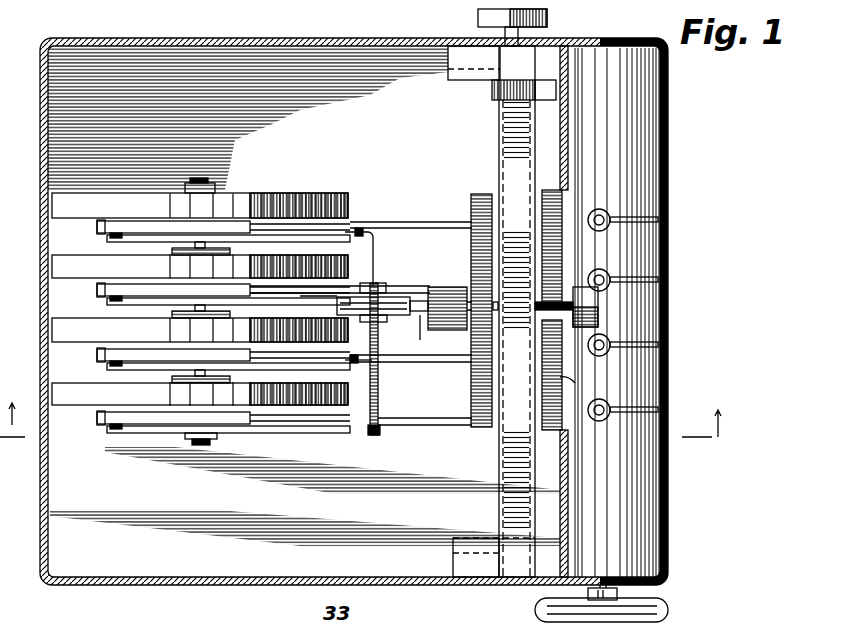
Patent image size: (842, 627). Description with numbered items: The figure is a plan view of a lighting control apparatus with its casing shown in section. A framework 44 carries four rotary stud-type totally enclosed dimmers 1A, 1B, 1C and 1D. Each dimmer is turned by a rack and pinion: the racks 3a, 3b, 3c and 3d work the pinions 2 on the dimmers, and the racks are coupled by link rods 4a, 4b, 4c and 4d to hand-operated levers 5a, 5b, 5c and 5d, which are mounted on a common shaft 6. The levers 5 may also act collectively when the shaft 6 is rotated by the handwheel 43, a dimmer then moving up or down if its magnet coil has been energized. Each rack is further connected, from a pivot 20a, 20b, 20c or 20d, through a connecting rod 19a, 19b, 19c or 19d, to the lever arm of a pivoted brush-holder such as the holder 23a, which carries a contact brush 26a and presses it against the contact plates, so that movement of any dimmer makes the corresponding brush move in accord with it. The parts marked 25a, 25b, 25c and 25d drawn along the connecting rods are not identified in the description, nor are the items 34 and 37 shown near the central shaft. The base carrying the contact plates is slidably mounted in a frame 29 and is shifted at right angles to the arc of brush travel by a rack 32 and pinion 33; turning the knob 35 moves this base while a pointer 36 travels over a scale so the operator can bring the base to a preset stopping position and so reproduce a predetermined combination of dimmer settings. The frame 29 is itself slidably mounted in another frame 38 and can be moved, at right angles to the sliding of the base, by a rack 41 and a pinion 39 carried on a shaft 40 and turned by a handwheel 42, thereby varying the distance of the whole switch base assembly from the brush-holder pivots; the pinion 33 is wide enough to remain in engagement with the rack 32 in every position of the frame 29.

The rotary stud-type totally enclosed dimmer 1A is at (82, 408).
The rotary stud-type totally enclosed dimmer 1B is at (52, 331).
The rotary stud-type totally enclosed dimmer 1C is at (52, 260).
The rotary stud-type totally enclosed dimmer 1D is at (115, 205).
The pinion 2 is at (369, 405).
The rack 3a is at (110, 428).
The rack 3b is at (135, 355).
The rack 3c is at (125, 290).
The rack 3d is at (135, 212).
The link rod 4a is at (420, 425).
The link rod 4b is at (411, 358).
The link rod 4c is at (405, 290).
The link rod 4d is at (432, 222).
The hand-operated lever 5 is at (315, 302).
The hand-operated lever 5a is at (608, 402).
The hand-operated lever 5b is at (608, 338).
The hand-operated lever 5c is at (608, 272).
The hand-operated lever 5d is at (608, 212).
The shaft 6 is at (612, 590).
The connecting rod 19a is at (322, 432).
The connecting rod 19b is at (305, 372).
The connecting rod 19c is at (280, 290).
The connecting rod 19d is at (272, 235).
The pivot 20a is at (155, 435).
The pivot 20b is at (100, 360).
The pivot 20c is at (100, 298).
The pivot 20d is at (100, 236).
The brush-holder 23a is at (388, 323).
The crank 25a is at (376, 437).
The crank 25b is at (380, 368).
The crank 25c is at (365, 285).
The crank 25d is at (372, 228).
The contact brush 26a is at (418, 322).
The frame 29 is at (510, 508).
The rack 32 is at (482, 428).
The pinion 33 is at (446, 287).
The shaft 34 is at (564, 298).
The knob 35 is at (600, 306).
The pointer 36 is at (578, 350).
The spring 37 is at (577, 394).
The frame 38 is at (448, 66).
The pinion 39 is at (492, 92).
The shaft 40 is at (520, 36).
The rack 41 is at (547, 100).
The handwheel 42 is at (478, 20).
The handwheel 43 is at (668, 612).
The framework 44 is at (180, 580).